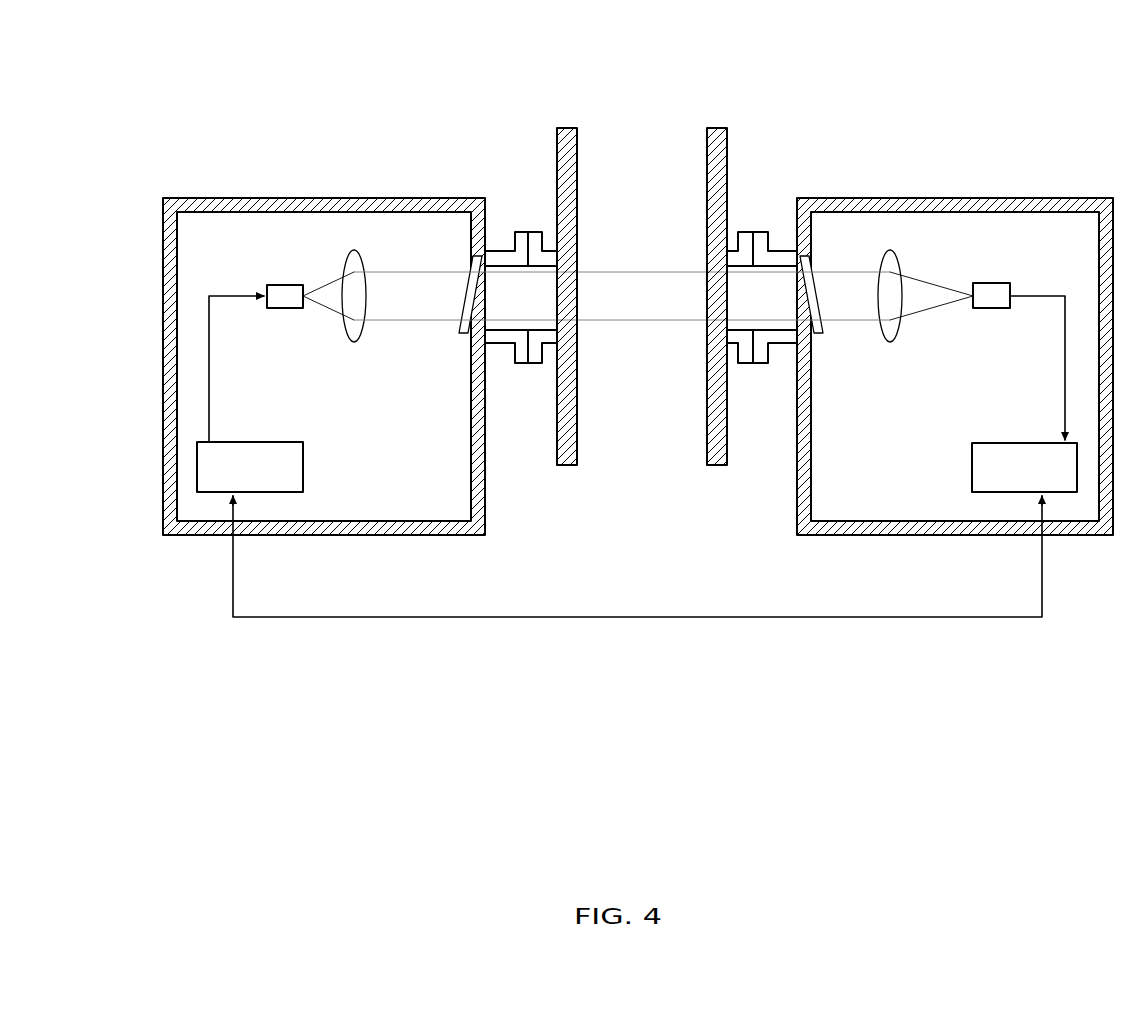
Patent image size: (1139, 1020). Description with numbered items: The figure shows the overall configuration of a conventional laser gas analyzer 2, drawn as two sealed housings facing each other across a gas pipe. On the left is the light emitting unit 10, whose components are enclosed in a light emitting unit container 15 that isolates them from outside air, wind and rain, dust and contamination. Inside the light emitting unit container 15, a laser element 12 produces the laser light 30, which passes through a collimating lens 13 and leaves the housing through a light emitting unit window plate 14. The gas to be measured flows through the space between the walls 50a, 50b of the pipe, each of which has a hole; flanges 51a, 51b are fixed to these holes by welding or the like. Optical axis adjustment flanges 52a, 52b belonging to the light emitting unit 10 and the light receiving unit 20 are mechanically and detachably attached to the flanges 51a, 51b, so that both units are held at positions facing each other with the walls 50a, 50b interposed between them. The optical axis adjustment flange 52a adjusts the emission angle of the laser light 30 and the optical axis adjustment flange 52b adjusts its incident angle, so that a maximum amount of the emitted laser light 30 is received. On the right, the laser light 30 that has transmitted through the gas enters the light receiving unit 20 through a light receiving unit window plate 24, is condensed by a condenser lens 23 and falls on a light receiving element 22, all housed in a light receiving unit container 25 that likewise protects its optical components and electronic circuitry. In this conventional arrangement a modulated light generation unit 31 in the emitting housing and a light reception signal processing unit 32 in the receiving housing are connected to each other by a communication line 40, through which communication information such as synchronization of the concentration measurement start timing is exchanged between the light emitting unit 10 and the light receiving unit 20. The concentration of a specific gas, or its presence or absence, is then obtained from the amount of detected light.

The conventional laser gas analyzer 2 is at (158, 85).
The light emitting unit 10 is at (308, 253).
The laser element 12 is at (272, 285).
The collimating lens 13 is at (352, 250).
The light emitting unit window plate 14 is at (472, 260).
The light emitting unit container 15 is at (245, 198).
The light receiving unit 20 is at (960, 253).
The light receiving element 22 is at (1003, 283).
The condenser lens 23 is at (893, 250).
The light receiving unit window plate 24 is at (810, 260).
The light receiving unit container 25 is at (1035, 198).
The laser light 30 is at (665, 280).
The modulated light generation unit 31 is at (262, 492).
The light reception signal processing unit 32 is at (1010, 492).
The communication line 40 is at (640, 617).
The wall 50a is at (565, 128).
The wall 50b is at (718, 128).
The flange 51a is at (535, 363).
The flange 51b is at (745, 363).
The optical axis adjustment flange 52a is at (520, 232).
The optical axis adjustment flange 52b is at (760, 232).